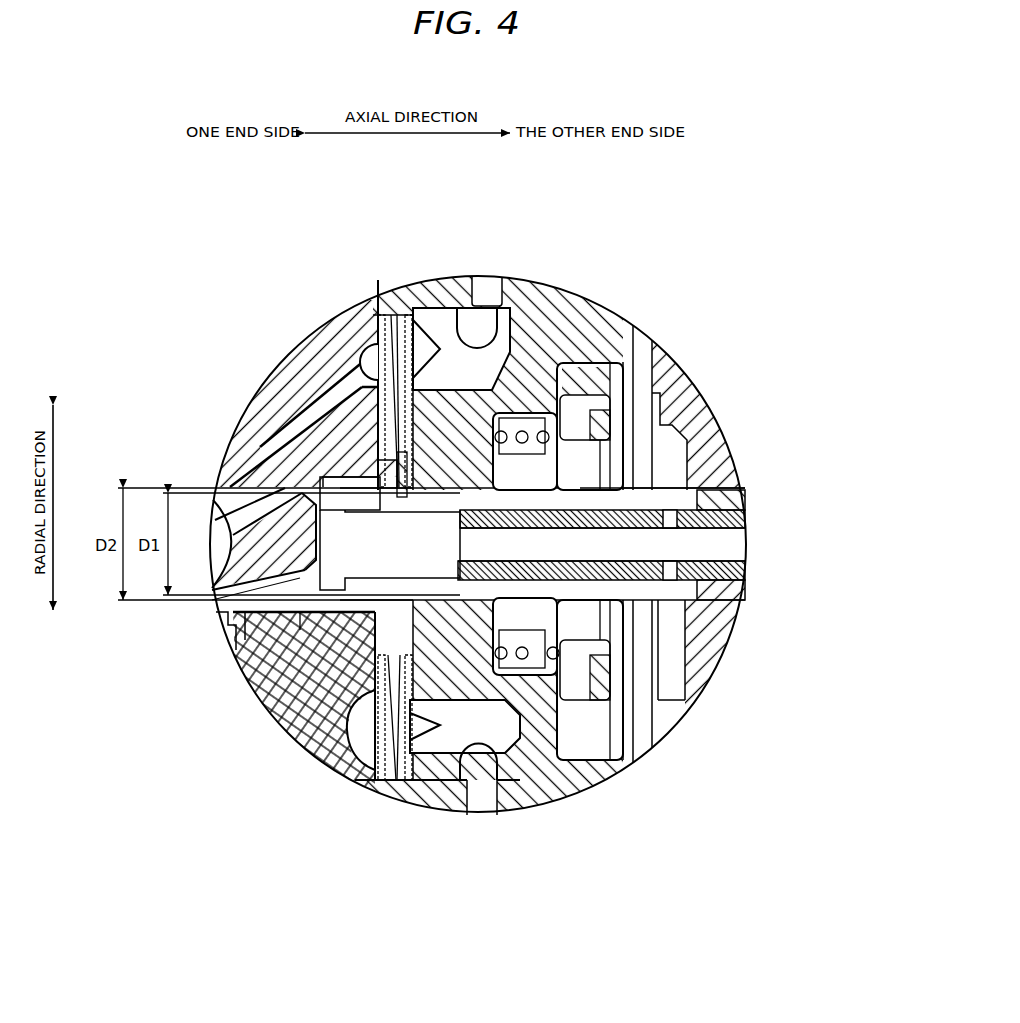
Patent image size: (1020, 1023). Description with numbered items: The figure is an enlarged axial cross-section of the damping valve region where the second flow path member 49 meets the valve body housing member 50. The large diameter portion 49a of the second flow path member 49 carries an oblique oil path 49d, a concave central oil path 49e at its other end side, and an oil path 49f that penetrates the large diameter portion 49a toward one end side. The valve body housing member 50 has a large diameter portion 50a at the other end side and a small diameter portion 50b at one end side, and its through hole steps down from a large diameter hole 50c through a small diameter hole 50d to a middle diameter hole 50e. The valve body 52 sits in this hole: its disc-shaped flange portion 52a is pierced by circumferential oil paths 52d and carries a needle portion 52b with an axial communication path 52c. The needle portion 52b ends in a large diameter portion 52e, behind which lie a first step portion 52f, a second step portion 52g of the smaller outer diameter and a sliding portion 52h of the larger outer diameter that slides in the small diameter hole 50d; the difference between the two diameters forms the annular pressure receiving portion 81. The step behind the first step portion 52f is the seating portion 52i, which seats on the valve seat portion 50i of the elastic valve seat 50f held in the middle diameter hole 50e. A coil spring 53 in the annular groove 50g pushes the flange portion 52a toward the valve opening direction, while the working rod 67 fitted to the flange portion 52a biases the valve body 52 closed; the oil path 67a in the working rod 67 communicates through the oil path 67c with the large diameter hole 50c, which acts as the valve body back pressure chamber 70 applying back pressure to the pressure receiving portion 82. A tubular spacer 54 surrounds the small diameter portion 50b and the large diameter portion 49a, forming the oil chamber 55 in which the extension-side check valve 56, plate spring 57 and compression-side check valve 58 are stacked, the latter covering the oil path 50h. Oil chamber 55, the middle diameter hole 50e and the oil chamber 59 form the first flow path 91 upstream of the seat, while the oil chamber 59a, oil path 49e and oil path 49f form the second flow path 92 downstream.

The second flow path member 49 is at (268, 387).
The large diameter portion 49a is at (283, 388).
The oil path 49d is at (270, 467).
The oil path 49e is at (225, 590).
The oil path 49f is at (250, 610).
The second flow path 92 is at (290, 645).
The valve body 52 is at (617, 360).
The flange portion 52a is at (598, 393).
The needle portion 52b is at (577, 400).
The communication path 52c is at (340, 515).
The oil paths 52d is at (585, 462).
The large diameter portion 52e is at (340, 455).
The first step portion 52f is at (346, 548).
The second step portion 52g is at (427, 335).
The sliding portion 52h is at (485, 437).
The seating portion 52i is at (398, 400).
The pressure receiving portion 81 is at (444, 437).
The pressure receiving portion 82 is at (722, 492).
The working rod 67 is at (745, 522).
The oil path 67a is at (740, 545).
The oil path 67c is at (700, 612).
The valve body back pressure chamber 70 is at (608, 620).
The coil spring 53 is at (615, 760).
The valve body housing member 50 is at (607, 763).
The large diameter portion 50a is at (595, 715).
The large diameter hole 50c is at (578, 717).
The annular groove 50g is at (517, 663).
The small diameter hole 50d is at (478, 652).
The small diameter portion 50b is at (430, 762).
The oil path 50h is at (450, 737).
The spacer 54 is at (440, 793).
The oil chamber 55 is at (381, 770).
The extension-side check valve 56 is at (355, 770).
The plate spring 57 is at (391, 770).
The compression-side check valve 58 is at (410, 765).
The oil chamber 59 is at (345, 745).
The oil chamber 59a is at (335, 640).
The middle diameter hole 50e is at (340, 735).
The valve seat 50f is at (373, 697).
The valve seat portion 50i is at (390, 680).
The first flow path 91 is at (355, 718).